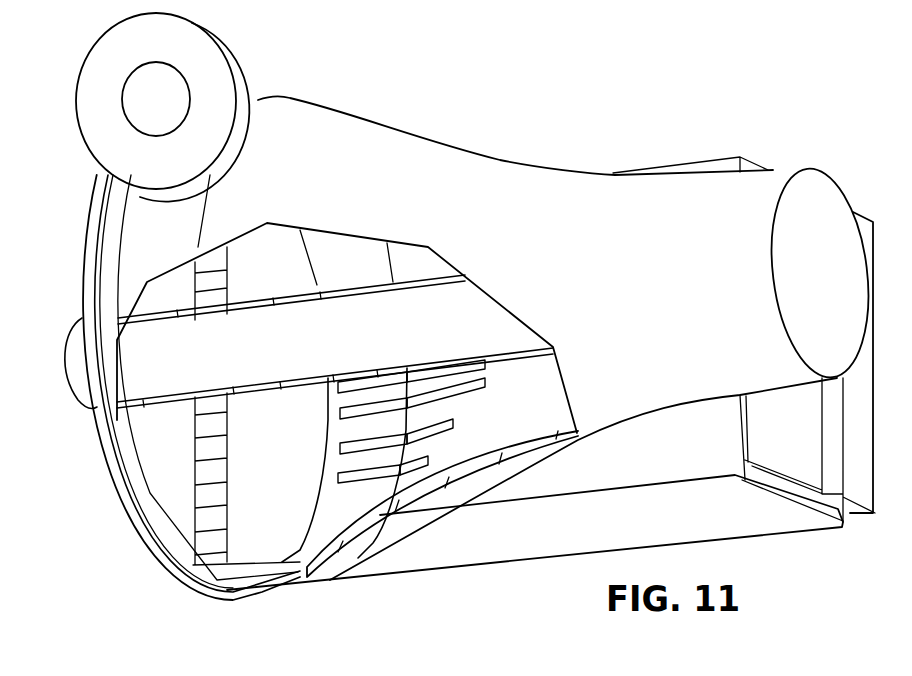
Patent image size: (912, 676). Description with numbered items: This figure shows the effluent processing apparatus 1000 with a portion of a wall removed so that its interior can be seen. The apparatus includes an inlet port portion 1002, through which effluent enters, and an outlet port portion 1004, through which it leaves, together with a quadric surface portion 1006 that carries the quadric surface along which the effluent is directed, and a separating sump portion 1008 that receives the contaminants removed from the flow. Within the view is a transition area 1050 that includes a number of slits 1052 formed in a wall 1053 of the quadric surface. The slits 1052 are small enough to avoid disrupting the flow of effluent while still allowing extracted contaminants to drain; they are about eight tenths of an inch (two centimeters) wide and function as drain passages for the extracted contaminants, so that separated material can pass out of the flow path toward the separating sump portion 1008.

The effluent processing apparatus 1000 is at (678, 108).
The inlet port portion 1002 is at (141, 97).
The outlet port portion 1004 is at (63, 357).
The quadric surface portion 1006 is at (633, 217).
The separating sump portion 1008 is at (707, 508).
The transition area 1050 is at (410, 505).
The slits 1052 is at (364, 447).
The wall 1053 is at (447, 438).